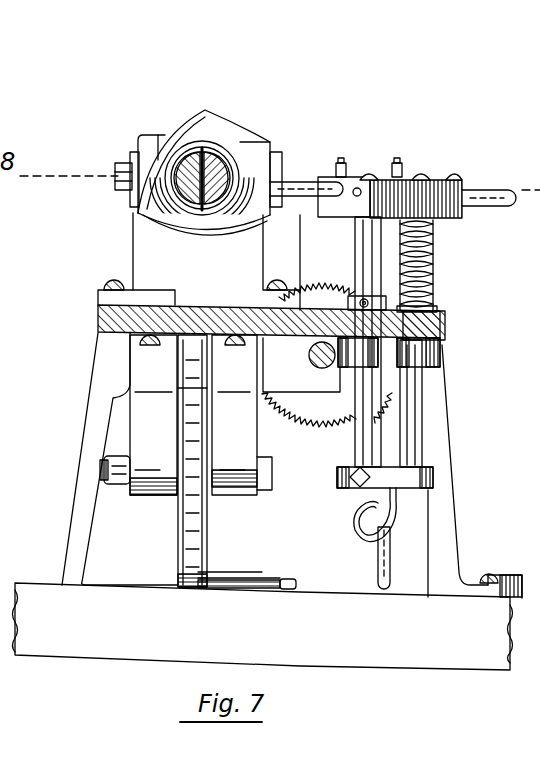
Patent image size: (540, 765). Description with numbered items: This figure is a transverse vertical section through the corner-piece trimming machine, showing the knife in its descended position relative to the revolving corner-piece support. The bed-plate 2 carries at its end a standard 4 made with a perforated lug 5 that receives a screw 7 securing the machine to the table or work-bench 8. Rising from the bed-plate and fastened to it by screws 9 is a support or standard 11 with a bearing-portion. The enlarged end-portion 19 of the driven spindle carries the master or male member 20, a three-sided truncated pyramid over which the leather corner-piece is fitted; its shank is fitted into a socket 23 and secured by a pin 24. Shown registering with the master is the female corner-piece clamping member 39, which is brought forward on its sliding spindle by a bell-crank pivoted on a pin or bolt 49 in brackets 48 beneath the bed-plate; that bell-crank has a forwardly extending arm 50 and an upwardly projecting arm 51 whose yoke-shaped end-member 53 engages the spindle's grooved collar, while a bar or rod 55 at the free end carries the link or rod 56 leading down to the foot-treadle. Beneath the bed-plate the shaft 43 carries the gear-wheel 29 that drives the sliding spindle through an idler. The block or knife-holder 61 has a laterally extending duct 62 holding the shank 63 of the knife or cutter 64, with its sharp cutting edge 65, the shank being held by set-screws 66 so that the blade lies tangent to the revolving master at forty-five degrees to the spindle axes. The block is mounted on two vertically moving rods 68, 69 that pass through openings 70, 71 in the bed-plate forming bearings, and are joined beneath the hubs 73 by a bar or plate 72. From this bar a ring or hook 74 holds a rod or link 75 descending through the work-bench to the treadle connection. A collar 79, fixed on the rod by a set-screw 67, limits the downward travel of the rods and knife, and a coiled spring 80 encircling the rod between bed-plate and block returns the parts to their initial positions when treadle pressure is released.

The bed-plate 2 is at (161, 324).
The standard 4 is at (102, 367).
The perforated ears or lugs 5 is at (54, 583).
The screws 7 is at (488, 578).
The table or work-bench 8 is at (105, 648).
The screws 9 is at (108, 285).
The support or standard 11 is at (148, 238).
The enlarged end-portion of spindle or shaft 19 is at (180, 190).
The master or male member 20 is at (200, 132).
The socket 23 is at (192, 192).
The pin 24 is at (204, 200).
The gear-wheel 29 is at (294, 434).
The female corner-piece clamping member 39 is at (228, 122).
The shaft 43 is at (314, 364).
The brackets 48 is at (145, 482).
The pin or bolt 49 is at (100, 473).
The forwardly extending arm of bell-crank 50 is at (200, 558).
The upwardly projecting arm of bell-crank 51 is at (190, 412).
The yoke-shaped or bifurcated end-member 53 is at (130, 160).
The bar or rod 55 is at (274, 575).
The link or rod 56 is at (289, 592).
The block or knife-holder 61 is at (437, 182).
The laterally extending duct 62 is at (351, 214).
The shank of knife 63 is at (491, 176).
The knife or cutter 64 is at (301, 184).
The sharp cutting edge 65 is at (302, 196).
The set-screws 66 is at (396, 158).
The set-screw 67 is at (438, 305).
The rod 68 is at (357, 256).
The rod 69 is at (436, 240).
The opening in bed-plate 70 is at (302, 328).
The opening in bed-plate 71 is at (447, 325).
The bar or plate 72 is at (436, 478).
The hubs 73 is at (441, 352).
The ring or hook 74 is at (372, 506).
The rod or link 75 is at (378, 564).
The collar 79 is at (348, 302).
The coiled spring 80 is at (435, 254).